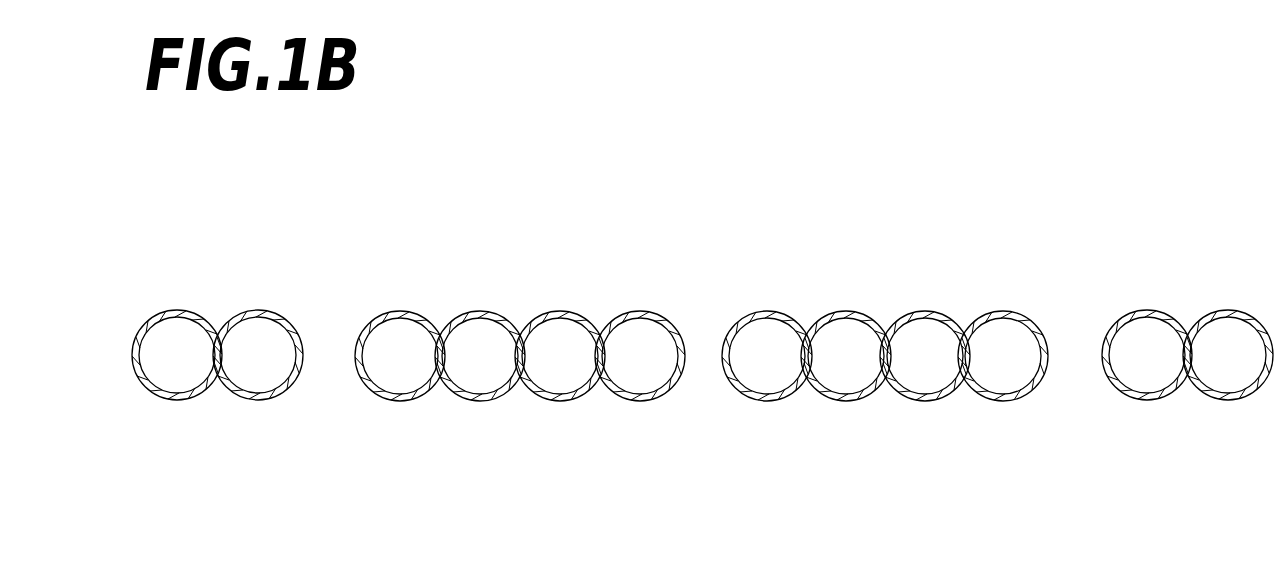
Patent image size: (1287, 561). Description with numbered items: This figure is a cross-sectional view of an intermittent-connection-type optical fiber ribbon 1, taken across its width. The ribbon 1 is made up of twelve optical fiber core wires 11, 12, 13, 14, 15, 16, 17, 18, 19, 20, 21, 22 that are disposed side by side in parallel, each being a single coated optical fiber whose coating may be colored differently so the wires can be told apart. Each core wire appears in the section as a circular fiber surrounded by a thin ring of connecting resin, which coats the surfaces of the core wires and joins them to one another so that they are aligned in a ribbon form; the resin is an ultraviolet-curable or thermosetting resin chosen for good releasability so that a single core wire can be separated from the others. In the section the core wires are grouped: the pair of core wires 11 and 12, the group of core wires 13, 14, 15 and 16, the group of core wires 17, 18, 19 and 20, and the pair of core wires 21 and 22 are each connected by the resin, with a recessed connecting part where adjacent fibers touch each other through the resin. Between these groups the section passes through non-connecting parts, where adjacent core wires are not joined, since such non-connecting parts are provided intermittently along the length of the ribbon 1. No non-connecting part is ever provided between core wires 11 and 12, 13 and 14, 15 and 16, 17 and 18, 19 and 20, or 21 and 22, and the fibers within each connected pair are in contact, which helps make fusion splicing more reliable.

The intermittent-connection-type optical fiber ribbon 1 is at (702, 305).
The optical fiber core wire 11 is at (181, 332).
The optical fiber core wire 12 is at (260, 332).
The optical fiber core wire 13 is at (402, 336).
The optical fiber core wire 14 is at (480, 336).
The optical fiber core wire 15 is at (557, 334).
The optical fiber core wire 16 is at (634, 331).
The optical fiber core wire 17 is at (766, 333).
The optical fiber core wire 18 is at (846, 333).
The optical fiber core wire 19 is at (925, 333).
The optical fiber core wire 20 is at (1010, 333).
The optical fiber core wire 21 is at (1142, 335).
The optical fiber core wire 22 is at (1214, 335).